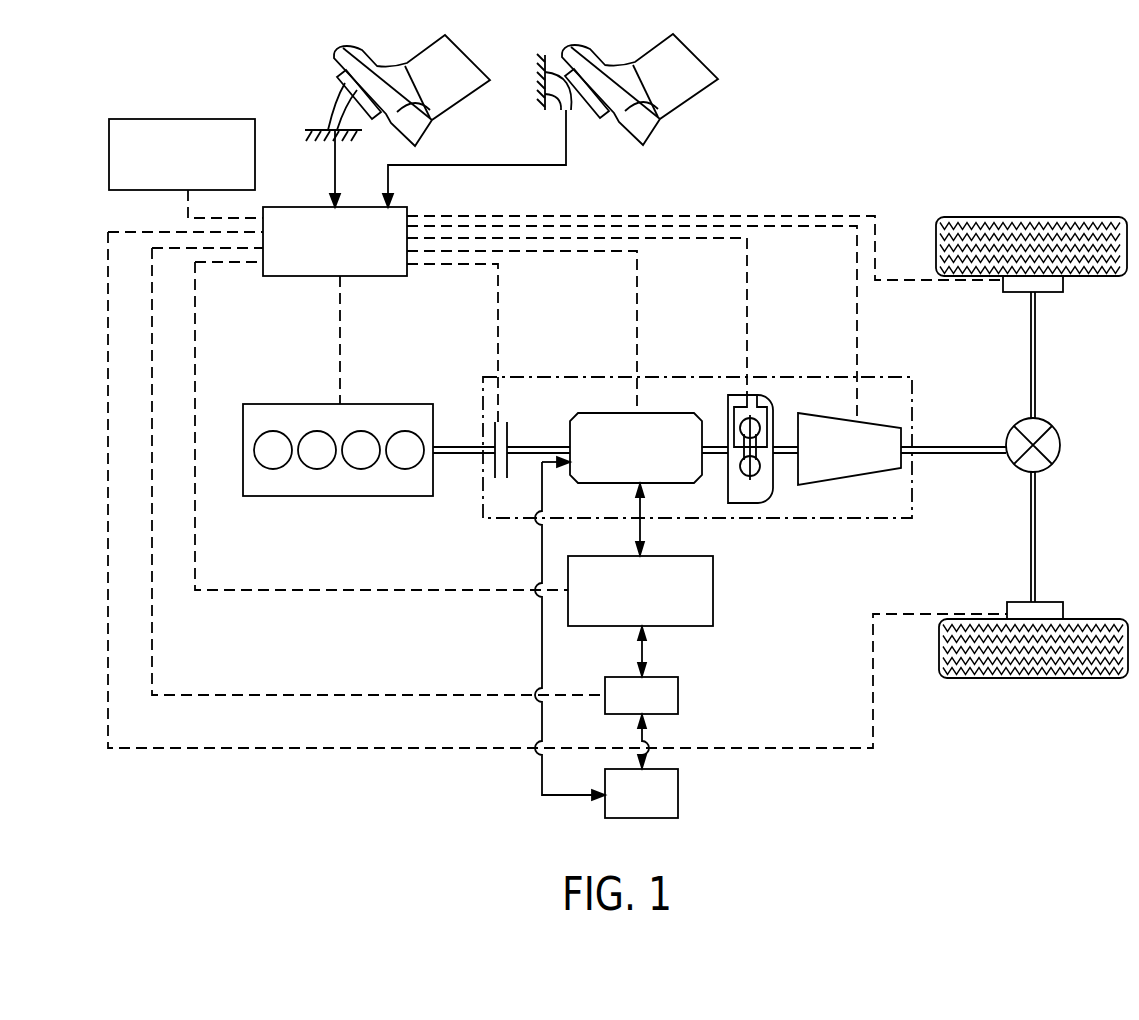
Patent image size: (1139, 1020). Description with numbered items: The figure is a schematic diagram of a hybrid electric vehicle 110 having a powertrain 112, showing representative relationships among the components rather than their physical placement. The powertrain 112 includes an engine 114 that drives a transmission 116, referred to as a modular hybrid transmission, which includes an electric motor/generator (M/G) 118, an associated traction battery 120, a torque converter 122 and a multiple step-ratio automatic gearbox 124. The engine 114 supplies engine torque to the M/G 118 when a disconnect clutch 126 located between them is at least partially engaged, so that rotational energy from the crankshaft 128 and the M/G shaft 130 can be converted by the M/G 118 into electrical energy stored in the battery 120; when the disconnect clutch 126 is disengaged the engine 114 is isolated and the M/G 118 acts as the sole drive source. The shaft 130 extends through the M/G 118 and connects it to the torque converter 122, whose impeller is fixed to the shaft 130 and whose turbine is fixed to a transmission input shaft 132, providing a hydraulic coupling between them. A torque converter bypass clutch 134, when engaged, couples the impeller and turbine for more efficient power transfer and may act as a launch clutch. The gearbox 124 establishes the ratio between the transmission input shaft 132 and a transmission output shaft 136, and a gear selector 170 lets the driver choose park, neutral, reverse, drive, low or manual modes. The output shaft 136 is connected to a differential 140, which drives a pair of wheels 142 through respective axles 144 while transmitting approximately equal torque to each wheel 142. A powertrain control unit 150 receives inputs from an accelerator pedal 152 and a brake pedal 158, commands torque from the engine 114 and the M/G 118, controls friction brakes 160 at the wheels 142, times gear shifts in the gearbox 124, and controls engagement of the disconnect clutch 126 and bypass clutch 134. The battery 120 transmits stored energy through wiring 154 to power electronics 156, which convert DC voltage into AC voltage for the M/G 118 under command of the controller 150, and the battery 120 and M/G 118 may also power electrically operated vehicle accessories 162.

The hybrid electric vehicle 110 is at (618, 429).
The powertrain 112 is at (577, 502).
The engine 114 is at (298, 403).
The transmission 116 is at (680, 377).
The electric motor/generator (M/G) 118 is at (615, 413).
The traction battery 120 is at (679, 692).
The torque converter 122 is at (755, 450).
The gearbox 124 is at (833, 485).
The disconnect clutch 126 is at (495, 478).
The crankshaft 128 is at (468, 446).
The M/G shaft 130 is at (540, 446).
The transmission input shaft 132 is at (780, 445).
The torque converter bypass clutch 134 is at (757, 400).
The transmission output shaft 136 is at (957, 446).
The differential 140 is at (1060, 443).
The wheels 142 is at (1033, 216).
The axles 144 is at (1038, 360).
The powertrain control unit (PCU) 150 is at (300, 206).
The accelerator pedal 152 is at (343, 88).
The wiring 154 is at (637, 653).
The power electronics 156 is at (714, 598).
The brake pedal 158 is at (592, 113).
The friction brakes 160 is at (1063, 282).
The vehicle accessories 162 is at (679, 793).
The gear selector 170 is at (193, 119).